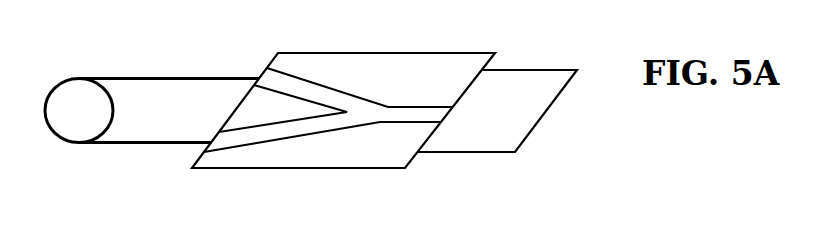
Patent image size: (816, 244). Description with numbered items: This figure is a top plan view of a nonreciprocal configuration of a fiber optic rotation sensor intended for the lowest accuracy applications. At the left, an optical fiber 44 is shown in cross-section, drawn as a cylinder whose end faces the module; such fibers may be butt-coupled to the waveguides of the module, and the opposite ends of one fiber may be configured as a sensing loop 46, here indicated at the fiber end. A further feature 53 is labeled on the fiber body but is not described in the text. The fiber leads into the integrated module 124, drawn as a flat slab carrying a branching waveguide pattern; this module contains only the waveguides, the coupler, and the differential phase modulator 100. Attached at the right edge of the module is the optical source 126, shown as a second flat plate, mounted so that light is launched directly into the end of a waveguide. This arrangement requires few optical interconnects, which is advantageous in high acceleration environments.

The optical fiber 44 is at (148, 77).
The sensing loop 46 is at (72, 145).
The fiber cladding 53 is at (147, 145).
The differential phase modulator 100 is at (223, 166).
The integrated module 124 is at (361, 70).
The optical source 126 is at (544, 113).